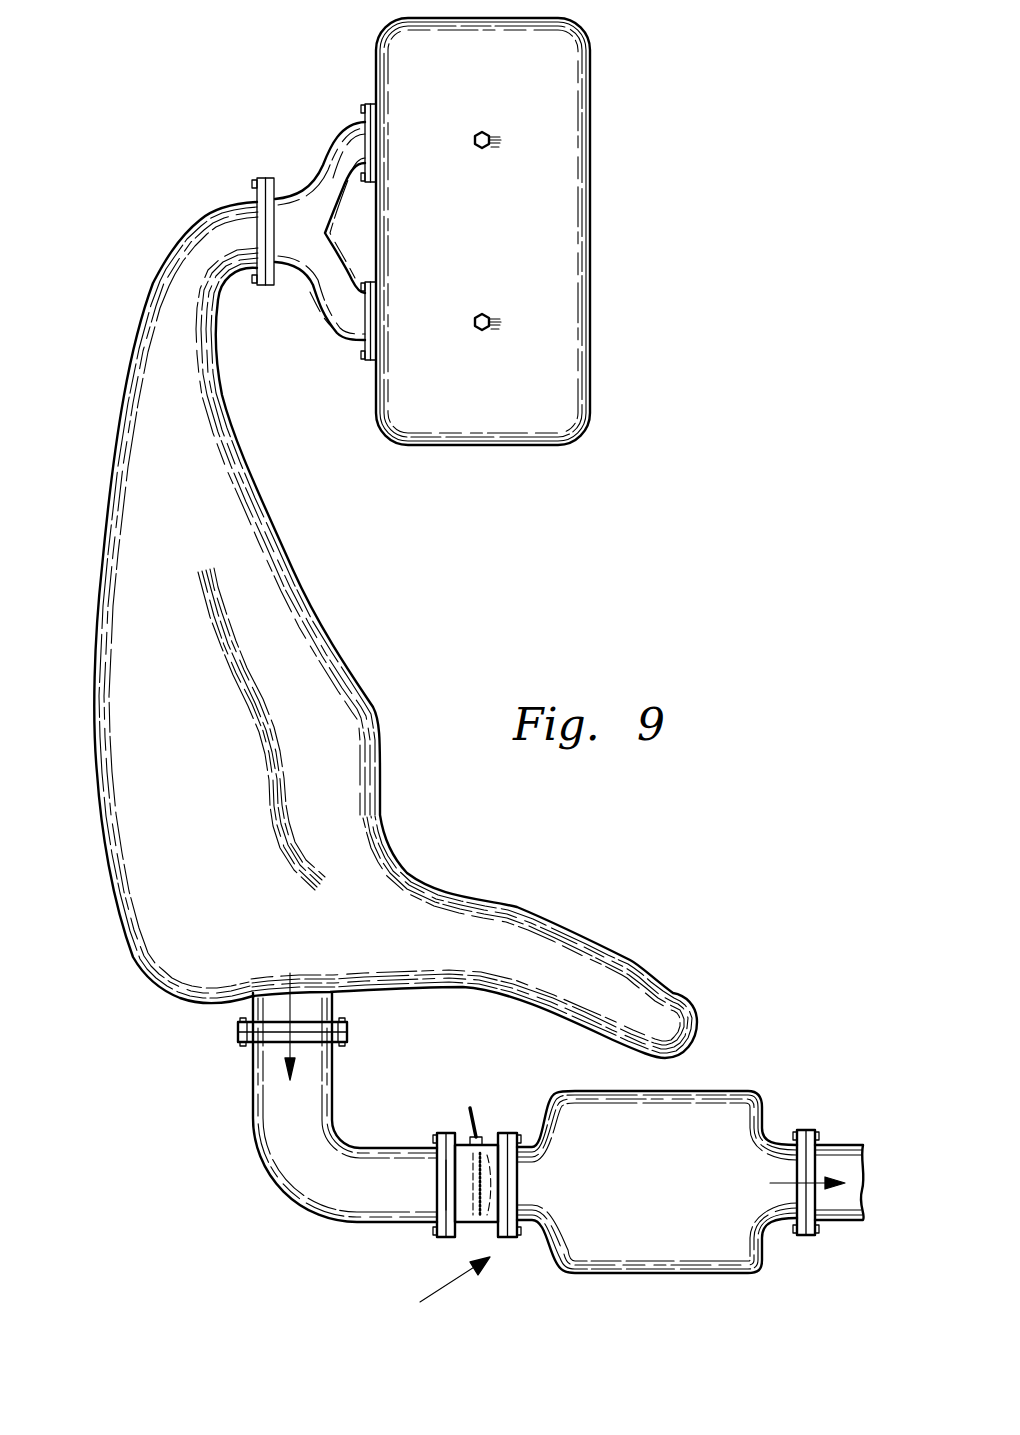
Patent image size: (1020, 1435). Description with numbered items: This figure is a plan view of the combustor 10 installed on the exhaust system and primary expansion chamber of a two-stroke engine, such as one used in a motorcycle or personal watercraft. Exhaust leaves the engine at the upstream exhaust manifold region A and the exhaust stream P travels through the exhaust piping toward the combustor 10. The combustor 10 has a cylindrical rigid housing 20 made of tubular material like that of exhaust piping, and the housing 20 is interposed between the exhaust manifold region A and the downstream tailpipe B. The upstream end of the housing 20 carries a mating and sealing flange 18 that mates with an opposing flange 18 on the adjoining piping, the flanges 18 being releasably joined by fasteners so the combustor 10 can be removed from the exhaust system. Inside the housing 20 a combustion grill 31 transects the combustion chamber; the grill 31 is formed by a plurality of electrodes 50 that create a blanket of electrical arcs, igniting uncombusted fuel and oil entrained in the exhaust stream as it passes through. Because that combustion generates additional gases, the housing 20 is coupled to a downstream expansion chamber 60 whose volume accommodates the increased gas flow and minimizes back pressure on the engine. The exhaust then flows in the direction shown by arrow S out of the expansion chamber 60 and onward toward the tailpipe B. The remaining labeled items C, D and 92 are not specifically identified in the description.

The combustor 10 is at (371, 1155).
The mating and sealing flange 18 is at (238, 1032).
The housing 20 is at (475, 1225).
The combustion grill 31 is at (507, 1172).
The electrodes 50 is at (445, 1174).
The expansion chamber 60 is at (720, 1091).
The sensor 92 is at (466, 1137).
The exhaust manifold region A is at (345, 150).
The tailpipe B is at (863, 1165).
The engine C is at (567, 275).
The exhaust duct D is at (120, 567).
The exhaust stream P is at (290, 990).
The arrow S is at (780, 1185).